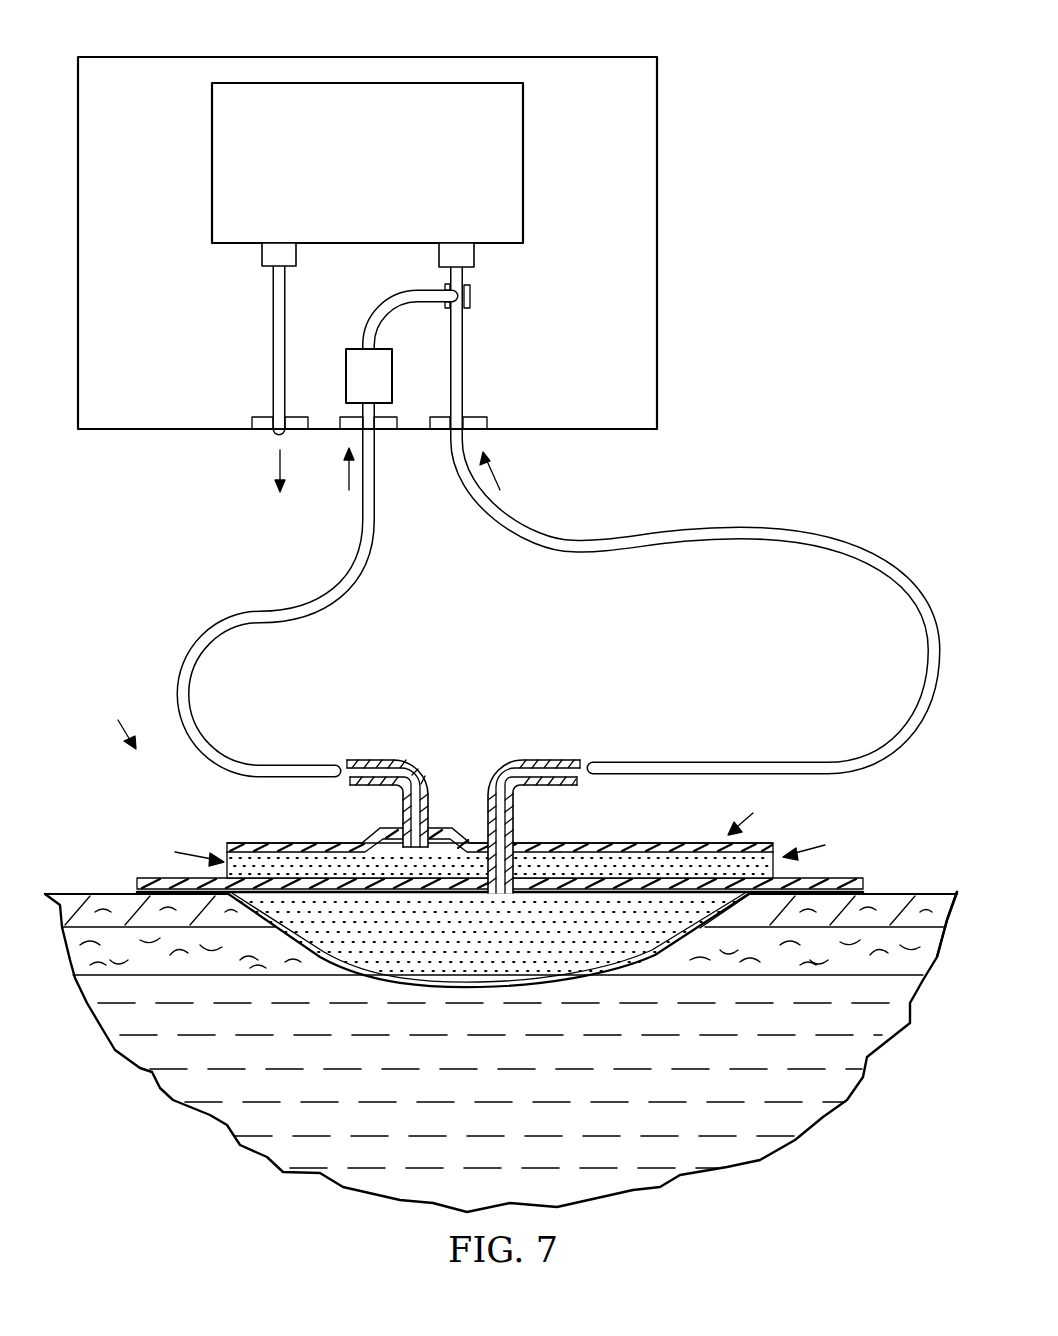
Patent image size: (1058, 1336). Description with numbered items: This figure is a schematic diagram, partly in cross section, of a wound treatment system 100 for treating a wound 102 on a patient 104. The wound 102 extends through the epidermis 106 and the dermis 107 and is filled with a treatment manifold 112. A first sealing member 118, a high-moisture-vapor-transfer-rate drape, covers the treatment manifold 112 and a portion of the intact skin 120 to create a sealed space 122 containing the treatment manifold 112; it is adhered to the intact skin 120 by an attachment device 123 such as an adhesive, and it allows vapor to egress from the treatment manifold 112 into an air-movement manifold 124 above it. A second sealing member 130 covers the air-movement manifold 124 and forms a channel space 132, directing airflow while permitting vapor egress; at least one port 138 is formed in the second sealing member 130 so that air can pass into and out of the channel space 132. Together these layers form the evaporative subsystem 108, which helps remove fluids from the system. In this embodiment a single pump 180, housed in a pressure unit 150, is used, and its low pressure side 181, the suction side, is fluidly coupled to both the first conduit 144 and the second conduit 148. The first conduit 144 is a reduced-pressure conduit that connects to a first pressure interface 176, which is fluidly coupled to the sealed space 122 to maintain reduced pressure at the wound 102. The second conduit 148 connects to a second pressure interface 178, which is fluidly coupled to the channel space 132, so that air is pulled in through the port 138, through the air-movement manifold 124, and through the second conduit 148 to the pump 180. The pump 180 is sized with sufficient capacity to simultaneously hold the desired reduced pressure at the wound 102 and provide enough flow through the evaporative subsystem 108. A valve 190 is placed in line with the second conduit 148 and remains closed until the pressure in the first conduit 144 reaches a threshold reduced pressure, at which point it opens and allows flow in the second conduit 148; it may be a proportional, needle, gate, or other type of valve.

The wound treatment system 100 is at (110, 722).
The wound 102 is at (613, 980).
The patient 104 is at (863, 1077).
The epidermis 106 is at (70, 893).
The dermis 107 is at (943, 950).
The evaporative subsystem 108 is at (502, 831).
The treatment manifold 112 is at (520, 948).
The first sealing member 118 is at (833, 874).
The intact skin 120 is at (110, 892).
The sealed space 122 is at (762, 903).
The attachment device 123 is at (868, 878).
The air-movement manifold 124 is at (667, 863).
The second sealing member 130 is at (262, 843).
The channel space 132 is at (310, 862).
The port 138 is at (226, 848).
The first conduit 144 is at (757, 527).
The second conduit 148 is at (262, 607).
The pressure unit 150 is at (147, 57).
The first pressure interface 176 is at (548, 760).
The second pressure interface 178 is at (372, 760).
The pump 180 is at (212, 163).
The low pressure side 181 is at (475, 252).
The valve 190 is at (350, 349).